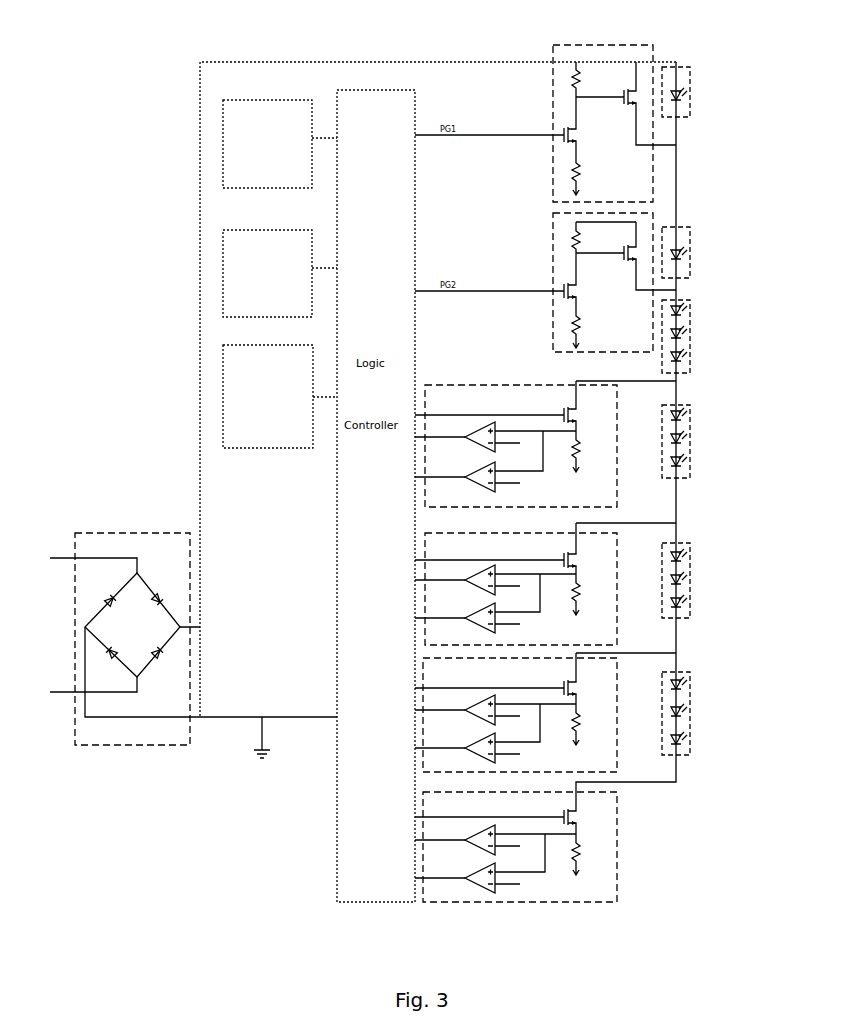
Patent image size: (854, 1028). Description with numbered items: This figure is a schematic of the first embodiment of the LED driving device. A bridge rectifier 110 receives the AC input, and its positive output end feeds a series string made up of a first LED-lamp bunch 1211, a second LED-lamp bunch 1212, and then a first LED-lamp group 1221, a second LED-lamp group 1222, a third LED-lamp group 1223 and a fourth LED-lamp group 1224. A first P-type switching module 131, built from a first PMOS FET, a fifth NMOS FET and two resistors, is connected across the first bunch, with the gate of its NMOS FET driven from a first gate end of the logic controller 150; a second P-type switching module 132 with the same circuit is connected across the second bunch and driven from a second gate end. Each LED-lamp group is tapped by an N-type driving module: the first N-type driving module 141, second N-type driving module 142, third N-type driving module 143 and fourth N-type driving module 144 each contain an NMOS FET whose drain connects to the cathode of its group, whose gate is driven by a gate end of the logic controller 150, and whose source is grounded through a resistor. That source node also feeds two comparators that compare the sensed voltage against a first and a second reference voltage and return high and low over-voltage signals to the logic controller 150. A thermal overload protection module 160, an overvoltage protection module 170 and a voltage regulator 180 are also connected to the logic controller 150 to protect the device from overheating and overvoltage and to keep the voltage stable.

The bridge rectifier 110 is at (98, 533).
The first P-type switching module 131 is at (553, 120).
The second P-type switching module 132 is at (553, 255).
The first N-type driving module 141 is at (620, 413).
The second N-type driving module 142 is at (620, 560).
The third N-type driving module 143 is at (620, 688).
The fourth N-type driving module 144 is at (620, 845).
The logic controller 150 is at (377, 90).
The thermal overload protection module 160 is at (223, 138).
The overvoltage protection module 170 is at (223, 250).
The voltage regulator 180 is at (223, 394).
The first LED-lamp bunch 1211 is at (690, 92).
The second LED-lamp bunch 1212 is at (690, 252).
The first LED-lamp group 1221 is at (690, 335).
The second LED-lamp group 1222 is at (690, 445).
The third LED-lamp group 1223 is at (690, 577).
The fourth LED-lamp group 1224 is at (690, 717).